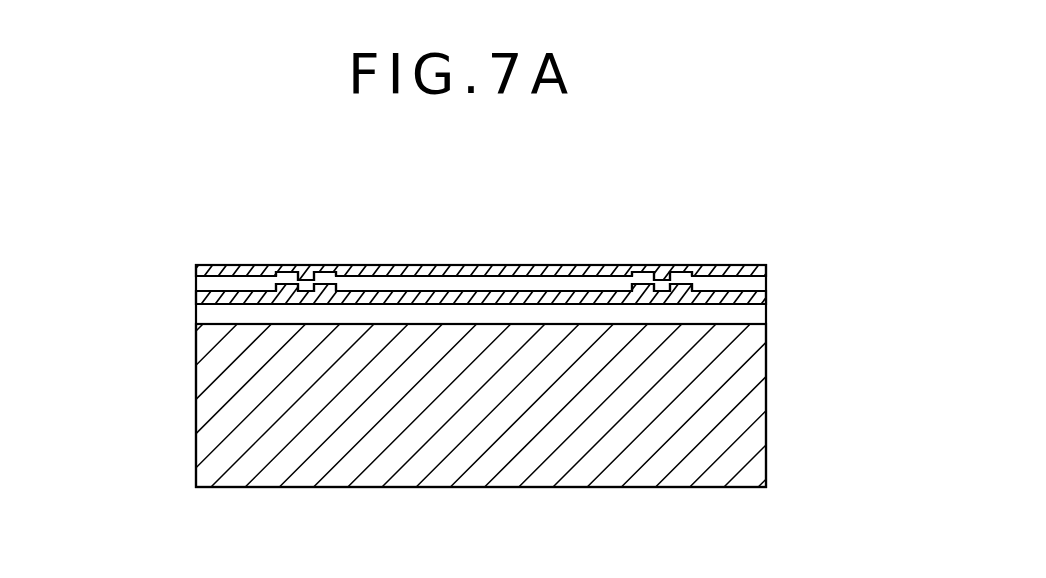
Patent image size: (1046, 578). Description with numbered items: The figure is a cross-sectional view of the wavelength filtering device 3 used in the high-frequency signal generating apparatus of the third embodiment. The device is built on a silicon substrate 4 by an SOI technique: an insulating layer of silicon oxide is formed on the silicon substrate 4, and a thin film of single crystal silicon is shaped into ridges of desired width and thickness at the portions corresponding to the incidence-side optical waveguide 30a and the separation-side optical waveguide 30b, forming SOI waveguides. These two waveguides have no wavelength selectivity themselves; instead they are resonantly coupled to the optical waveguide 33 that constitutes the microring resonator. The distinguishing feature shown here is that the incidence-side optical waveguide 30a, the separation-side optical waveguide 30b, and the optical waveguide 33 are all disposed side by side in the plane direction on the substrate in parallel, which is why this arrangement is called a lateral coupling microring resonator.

The wavelength filtering device 3 is at (199, 219).
The silicon substrate 4 is at (742, 413).
The incidence-side optical waveguide 30a is at (285, 287).
The separation-side optical waveguide 30b is at (688, 286).
The optical waveguide 33 is at (633, 265).